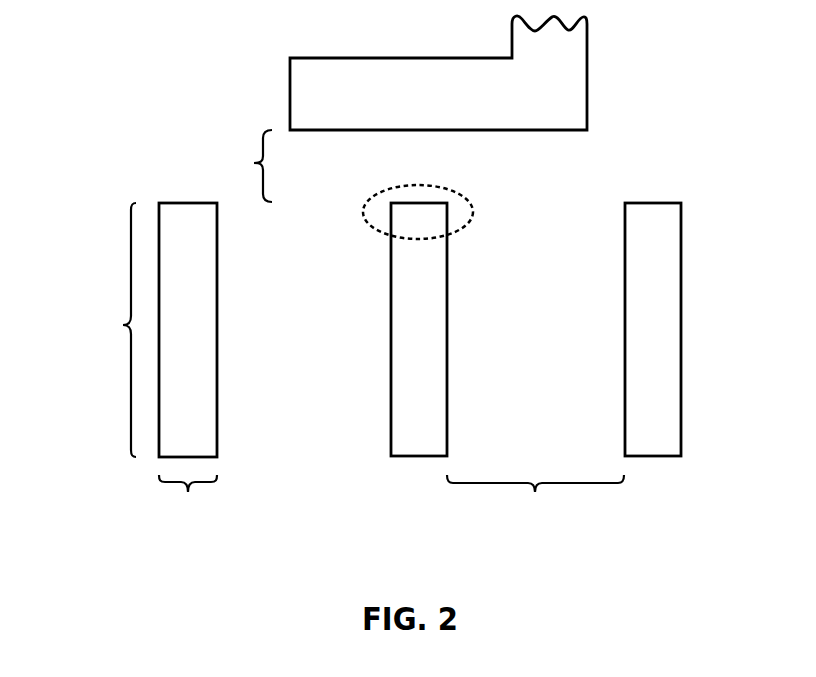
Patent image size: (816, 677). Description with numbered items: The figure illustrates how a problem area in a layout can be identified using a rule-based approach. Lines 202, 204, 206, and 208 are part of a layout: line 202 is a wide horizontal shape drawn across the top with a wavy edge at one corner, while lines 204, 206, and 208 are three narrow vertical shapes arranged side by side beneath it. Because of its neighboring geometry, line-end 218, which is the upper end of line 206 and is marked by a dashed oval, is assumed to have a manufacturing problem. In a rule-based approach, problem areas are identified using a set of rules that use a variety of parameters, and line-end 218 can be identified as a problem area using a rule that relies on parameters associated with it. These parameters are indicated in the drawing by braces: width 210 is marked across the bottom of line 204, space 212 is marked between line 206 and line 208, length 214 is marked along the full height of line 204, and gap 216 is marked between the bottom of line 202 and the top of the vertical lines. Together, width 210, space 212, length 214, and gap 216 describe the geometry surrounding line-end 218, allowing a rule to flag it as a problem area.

The line 202 is at (465, 73).
The line 204 is at (214, 330).
The line 206 is at (446, 329).
The line 208 is at (679, 329).
The width 210 is at (188, 513).
The space 212 is at (535, 512).
The length 214 is at (85, 330).
The gap 216 is at (238, 166).
The line-end 218 is at (474, 212).